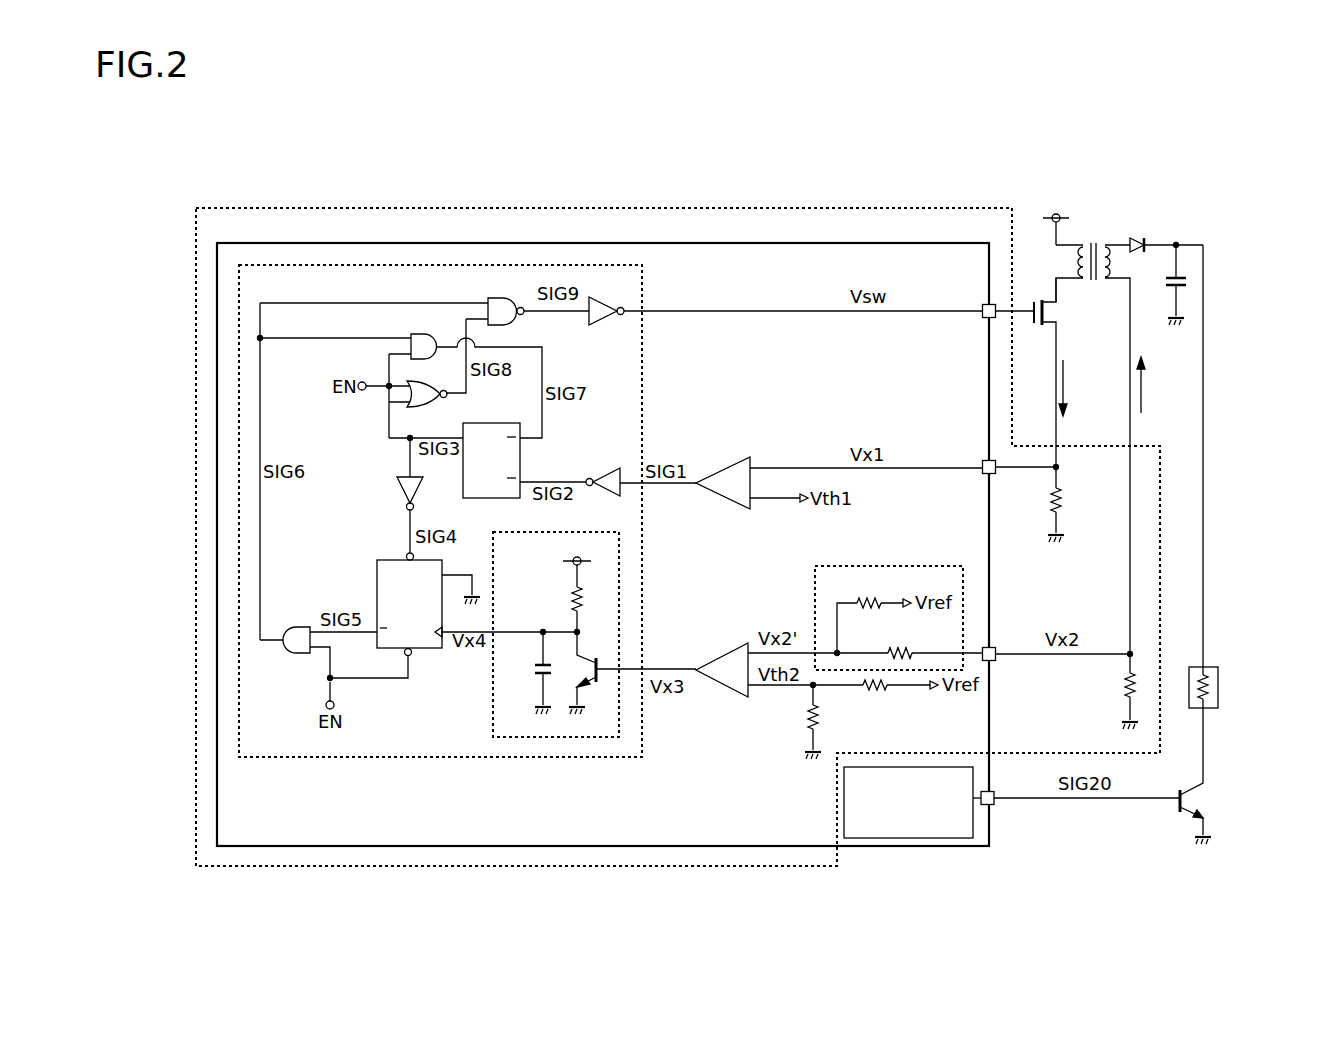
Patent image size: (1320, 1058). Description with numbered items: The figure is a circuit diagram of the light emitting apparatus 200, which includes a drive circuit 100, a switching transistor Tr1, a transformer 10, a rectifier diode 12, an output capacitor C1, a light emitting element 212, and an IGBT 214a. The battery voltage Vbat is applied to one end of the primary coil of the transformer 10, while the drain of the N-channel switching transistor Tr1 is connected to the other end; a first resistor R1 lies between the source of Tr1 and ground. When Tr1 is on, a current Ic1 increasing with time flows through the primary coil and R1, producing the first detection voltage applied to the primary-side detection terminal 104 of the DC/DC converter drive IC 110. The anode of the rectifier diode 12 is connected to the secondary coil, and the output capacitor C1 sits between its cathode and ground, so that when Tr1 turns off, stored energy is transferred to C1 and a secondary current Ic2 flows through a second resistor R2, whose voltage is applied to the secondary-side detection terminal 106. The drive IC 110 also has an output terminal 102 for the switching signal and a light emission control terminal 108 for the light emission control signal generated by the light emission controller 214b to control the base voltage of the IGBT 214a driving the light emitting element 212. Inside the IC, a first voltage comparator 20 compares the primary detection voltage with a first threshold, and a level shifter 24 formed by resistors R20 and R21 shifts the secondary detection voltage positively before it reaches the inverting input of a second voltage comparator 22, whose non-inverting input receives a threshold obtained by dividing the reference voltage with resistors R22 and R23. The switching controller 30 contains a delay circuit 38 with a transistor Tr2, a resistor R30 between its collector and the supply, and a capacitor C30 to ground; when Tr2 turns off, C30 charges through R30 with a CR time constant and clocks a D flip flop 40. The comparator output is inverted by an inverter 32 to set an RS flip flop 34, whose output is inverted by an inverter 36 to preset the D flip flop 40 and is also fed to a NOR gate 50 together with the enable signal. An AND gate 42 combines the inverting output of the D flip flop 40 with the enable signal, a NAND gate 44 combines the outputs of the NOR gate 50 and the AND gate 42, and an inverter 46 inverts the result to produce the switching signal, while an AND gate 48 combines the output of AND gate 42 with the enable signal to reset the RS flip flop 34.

The drive circuit 100 is at (605, 208).
The DC/DC converter drive IC 110 is at (803, 243).
The switching controller 30 is at (642, 388).
The NAND gate 44 is at (502, 298).
The inverter 46 is at (605, 297).
The AND gate 48 is at (420, 334).
The NOR gate 50 is at (432, 381).
The RS flip flop 34 is at (495, 423).
The inverter 32 is at (608, 472).
The inverter 36 is at (397, 490).
The D flip flop 40 is at (377, 578).
The AND gate 42 is at (305, 656).
The delay circuit 38 is at (569, 634).
The first voltage comparator 20 is at (698, 498).
The second voltage comparator 22 is at (834, 693).
The level shifter 24 is at (889, 607).
The output terminal 102 is at (983, 305).
The primary-side detection terminal 104 is at (983, 461).
The secondary-side detection terminal 106 is at (994, 661).
The light emission control terminal 108 is at (994, 805).
The transformer 10 is at (1093, 282).
The rectifier diode 12 is at (1137, 238).
The light emitting element 212 is at (1218, 688).
The IGBT 214a is at (1216, 776).
The light emission controller 214b is at (895, 838).
The light emitting apparatus 200 is at (739, 911).
The switching transistor Tr1 is at (1026, 372).
The transistor Tr2 is at (632, 673).
The first resistor R1 is at (1042, 504).
The second resistor R2 is at (1067, 691).
The output capacitor C1 is at (1165, 284).
The resistor R30 is at (564, 594).
The capacitor C30 is at (527, 673).
The resistor R20 is at (901, 641).
The resistor R21 is at (874, 616).
The resistor R22 is at (875, 701).
The resistor R23 is at (797, 721).
The battery voltage Vbat is at (1055, 216).
The current Ic1 is at (1077, 388).
The current Ic2 is at (1154, 385).